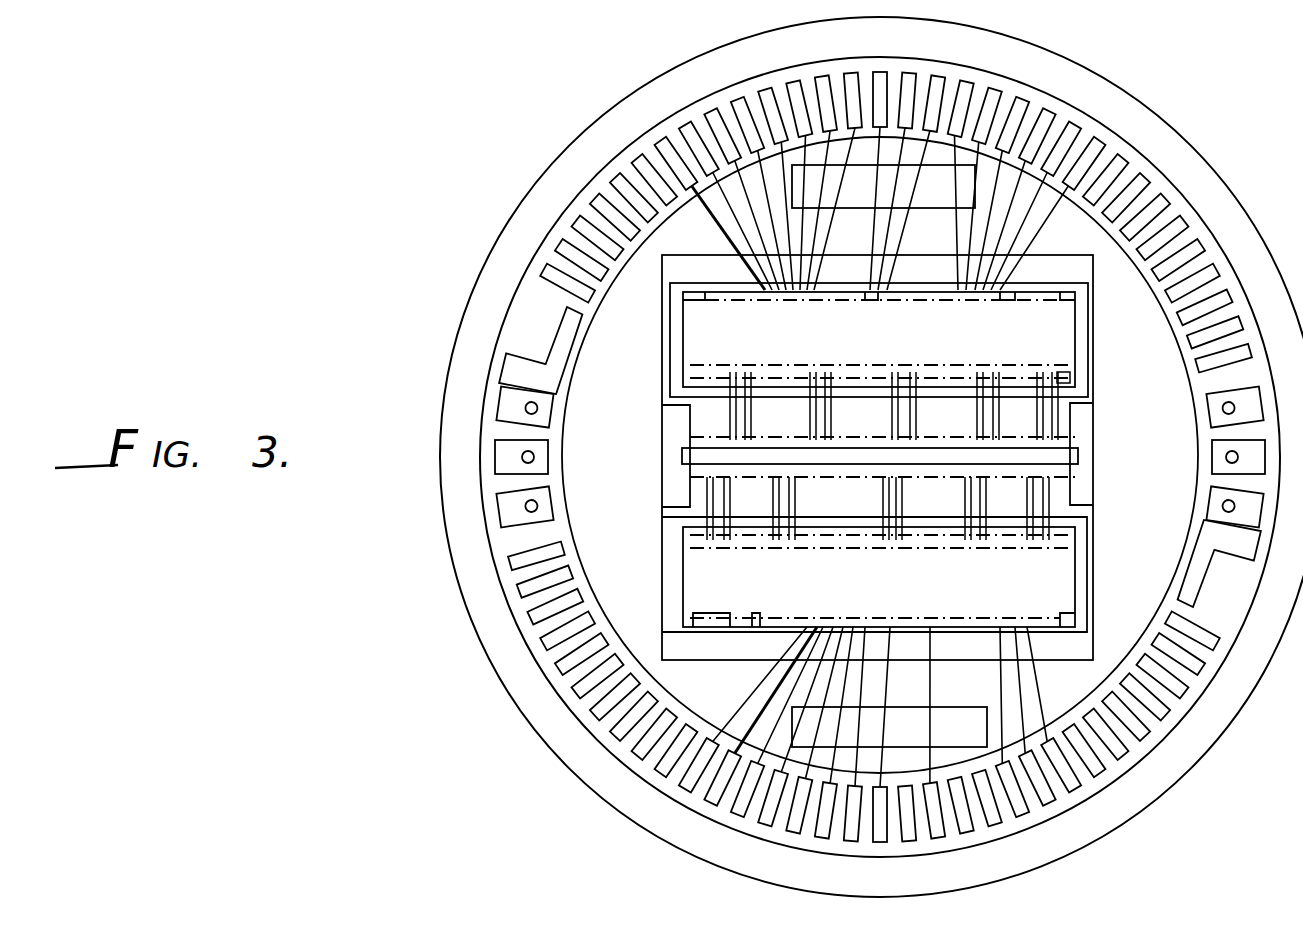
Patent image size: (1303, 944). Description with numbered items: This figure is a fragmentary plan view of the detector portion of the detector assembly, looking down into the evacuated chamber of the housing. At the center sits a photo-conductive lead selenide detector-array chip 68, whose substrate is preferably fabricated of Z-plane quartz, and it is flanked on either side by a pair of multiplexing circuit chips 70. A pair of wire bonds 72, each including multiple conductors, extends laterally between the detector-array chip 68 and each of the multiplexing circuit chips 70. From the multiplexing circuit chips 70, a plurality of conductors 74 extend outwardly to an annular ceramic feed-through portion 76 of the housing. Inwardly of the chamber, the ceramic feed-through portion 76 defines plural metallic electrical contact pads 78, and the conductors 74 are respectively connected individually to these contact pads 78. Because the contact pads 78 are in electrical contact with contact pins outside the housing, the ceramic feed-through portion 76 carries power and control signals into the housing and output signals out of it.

The detector-array chip 68 is at (1048, 490).
The multiplexing circuit chips 70 is at (690, 330).
The wire bonds 72 is at (1062, 392).
The conductors 74 is at (720, 215).
The ceramic feed-through portion 76 is at (569, 380).
The contact pads 78 is at (773, 88).